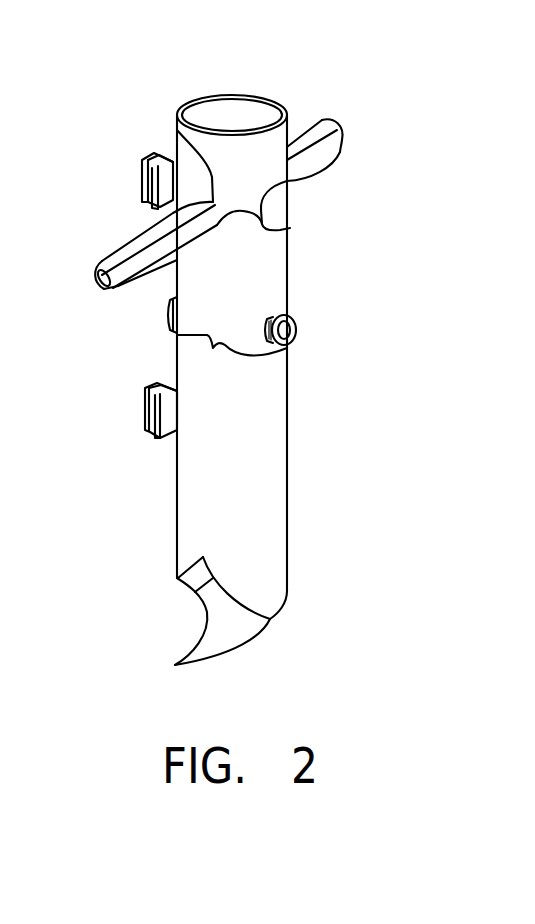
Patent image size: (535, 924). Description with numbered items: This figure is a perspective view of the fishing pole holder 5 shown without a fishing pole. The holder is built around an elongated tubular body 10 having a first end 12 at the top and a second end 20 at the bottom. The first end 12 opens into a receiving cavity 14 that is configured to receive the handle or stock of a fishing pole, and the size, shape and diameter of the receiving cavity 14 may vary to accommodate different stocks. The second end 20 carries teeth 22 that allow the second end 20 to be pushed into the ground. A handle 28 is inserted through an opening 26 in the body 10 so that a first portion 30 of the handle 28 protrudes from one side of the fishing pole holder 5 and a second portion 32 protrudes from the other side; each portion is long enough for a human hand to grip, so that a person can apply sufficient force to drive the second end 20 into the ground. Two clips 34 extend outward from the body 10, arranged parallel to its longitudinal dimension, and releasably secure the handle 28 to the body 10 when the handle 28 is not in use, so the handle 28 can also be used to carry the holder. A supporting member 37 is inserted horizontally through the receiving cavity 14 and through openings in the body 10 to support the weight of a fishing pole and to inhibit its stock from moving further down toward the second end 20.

The fishing pole holder 5 is at (349, 308).
The body 10 is at (267, 502).
The first end 12 is at (285, 107).
The receiving cavity 14 is at (215, 110).
The second end 20 is at (267, 577).
The teeth 22 is at (202, 629).
The opening 26 is at (176, 132).
The handle 28 is at (290, 228).
The first portion 30 is at (150, 227).
The second portion 32 is at (296, 133).
The clip 34 is at (142, 170).
The supporting member 37 is at (213, 348).